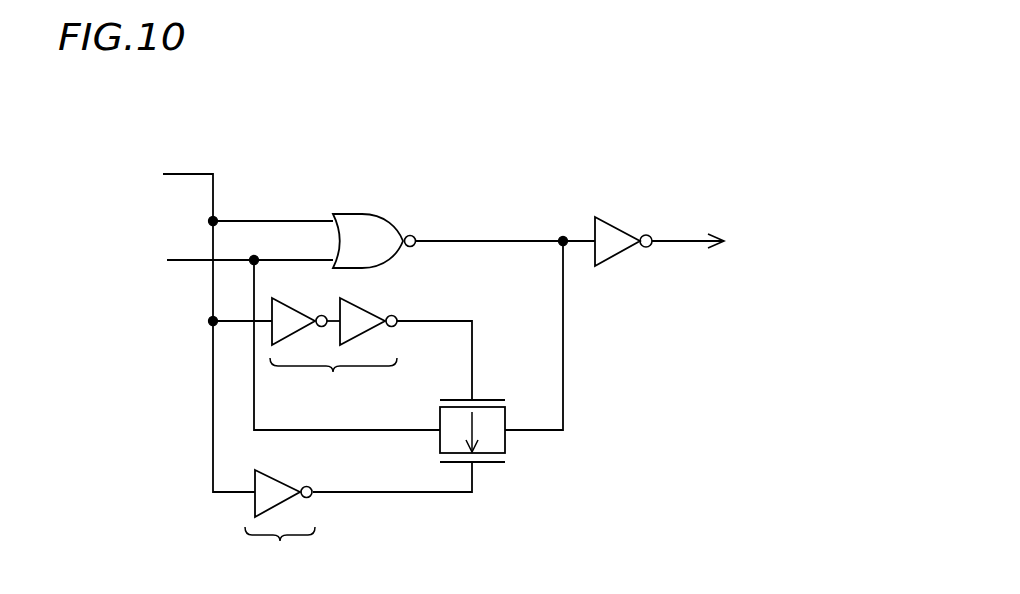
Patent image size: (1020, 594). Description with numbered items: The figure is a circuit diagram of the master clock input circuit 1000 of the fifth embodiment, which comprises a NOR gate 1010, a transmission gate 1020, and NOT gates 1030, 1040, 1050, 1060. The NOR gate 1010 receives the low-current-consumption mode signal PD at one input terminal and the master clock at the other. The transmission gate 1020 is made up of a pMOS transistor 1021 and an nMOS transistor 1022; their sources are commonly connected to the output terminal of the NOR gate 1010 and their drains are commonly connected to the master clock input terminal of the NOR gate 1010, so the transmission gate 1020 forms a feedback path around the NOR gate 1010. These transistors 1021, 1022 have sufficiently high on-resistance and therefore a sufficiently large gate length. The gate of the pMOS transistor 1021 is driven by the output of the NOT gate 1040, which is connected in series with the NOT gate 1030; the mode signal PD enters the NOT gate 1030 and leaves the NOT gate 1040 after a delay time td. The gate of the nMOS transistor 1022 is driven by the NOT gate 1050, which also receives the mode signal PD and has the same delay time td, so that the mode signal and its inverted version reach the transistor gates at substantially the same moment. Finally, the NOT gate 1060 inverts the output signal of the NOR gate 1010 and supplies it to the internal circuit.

The master clock input circuit 1000 is at (613, 91).
The NOR gate 1010 is at (397, 219).
The transmission gate 1020 is at (600, 462).
The pMOS transistor 1021 is at (505, 418).
The nMOS transistor 1022 is at (505, 448).
The NOT gate 1030 is at (315, 292).
The NOT gate 1040 is at (372, 306).
The NOT gate 1050 is at (283, 482).
The NOT gate 1060 is at (620, 229).